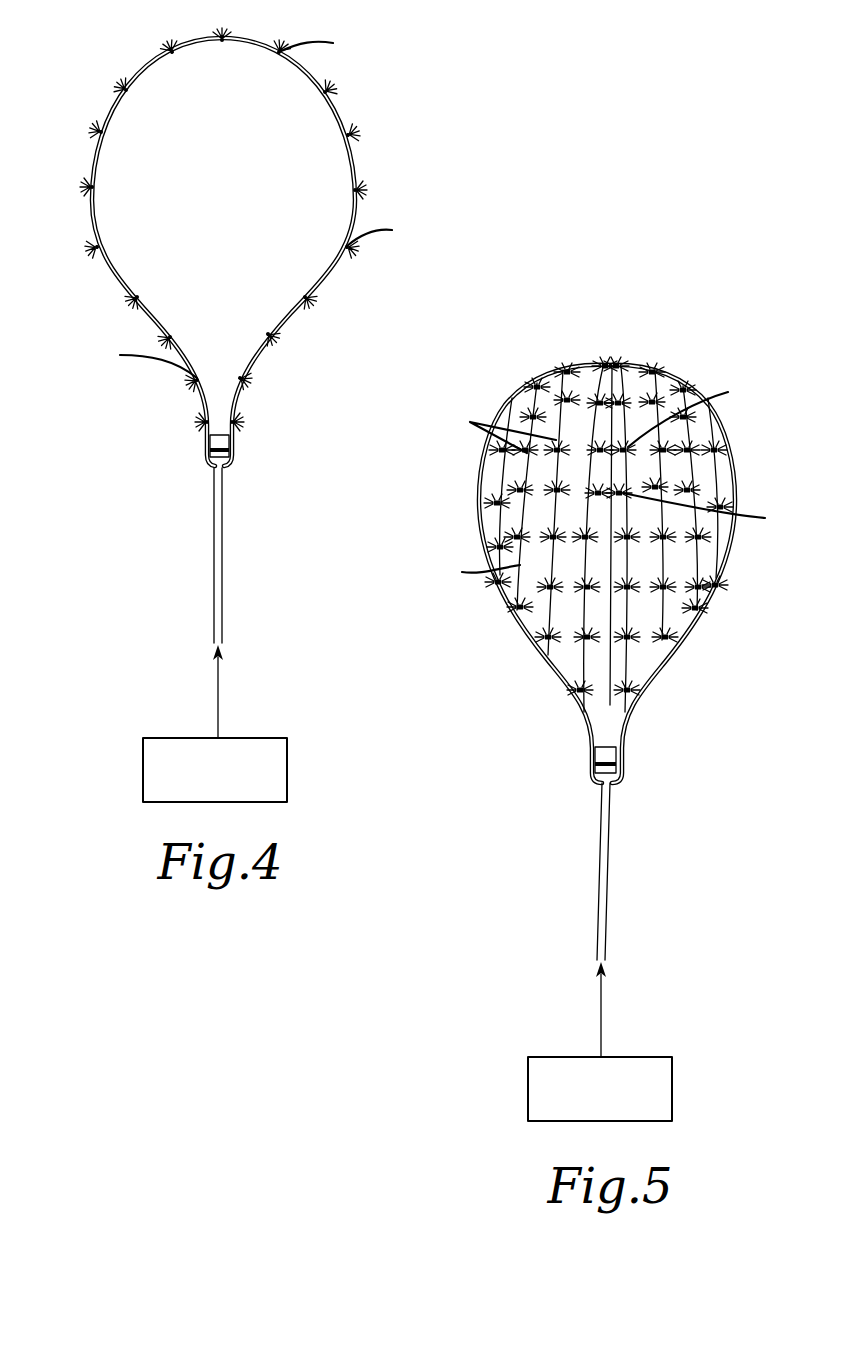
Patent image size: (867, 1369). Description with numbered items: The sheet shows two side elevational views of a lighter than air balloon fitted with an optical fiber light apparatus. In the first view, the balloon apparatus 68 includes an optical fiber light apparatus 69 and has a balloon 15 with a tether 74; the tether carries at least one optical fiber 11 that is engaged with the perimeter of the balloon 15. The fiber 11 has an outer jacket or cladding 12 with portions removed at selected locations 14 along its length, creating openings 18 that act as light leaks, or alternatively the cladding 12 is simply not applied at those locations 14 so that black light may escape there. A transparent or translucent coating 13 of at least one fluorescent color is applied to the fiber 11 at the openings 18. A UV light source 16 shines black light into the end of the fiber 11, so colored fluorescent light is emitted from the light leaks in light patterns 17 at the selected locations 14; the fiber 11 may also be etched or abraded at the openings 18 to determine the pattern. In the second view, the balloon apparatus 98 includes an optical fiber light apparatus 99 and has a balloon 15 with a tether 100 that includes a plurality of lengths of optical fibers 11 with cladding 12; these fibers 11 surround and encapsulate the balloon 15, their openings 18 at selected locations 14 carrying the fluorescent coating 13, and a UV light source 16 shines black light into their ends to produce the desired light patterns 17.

In FIG. 4, the optical fiber 11 is at (333, 272).
In FIG. 5, the optical fiber 11 is at (553, 375).
In FIG. 4, the outer jacket or cladding 12 is at (355, 212).
In FIG. 5, the outer jacket or cladding 12 is at (492, 512).
In FIG. 4, the transparent or translucent coating 13 is at (222, 42).
In FIG. 5, the transparent or translucent coating 13 is at (538, 390).
In FIG. 4, the selected locations 14 is at (255, 204).
In FIG. 5, the selected locations 14 is at (614, 512).
In FIG. 4, the balloon 15 is at (326, 176).
In FIG. 5, the balloon 15 is at (630, 383).
In FIG. 4, the UV light source 16 is at (143, 770).
In FIG. 5, the UV light source 16 is at (528, 1092).
In FIG. 4, the light patterns 17 is at (108, 28).
In FIG. 5, the light patterns 17 is at (488, 363).
In FIG. 4, the openings 18 is at (324, 93).
In FIG. 5, the openings 18 is at (684, 388).
In FIG. 4, the balloon apparatus 68 is at (424, 86).
In FIG. 4, the optical fiber light apparatus 69 is at (180, 521).
In FIG. 4, the tether 74 is at (223, 560).
In FIG. 5, the balloon apparatus 98 is at (767, 406).
In FIG. 5, the optical fiber light apparatus 99 is at (533, 767).
In FIG. 5, the tether 100 is at (604, 878).